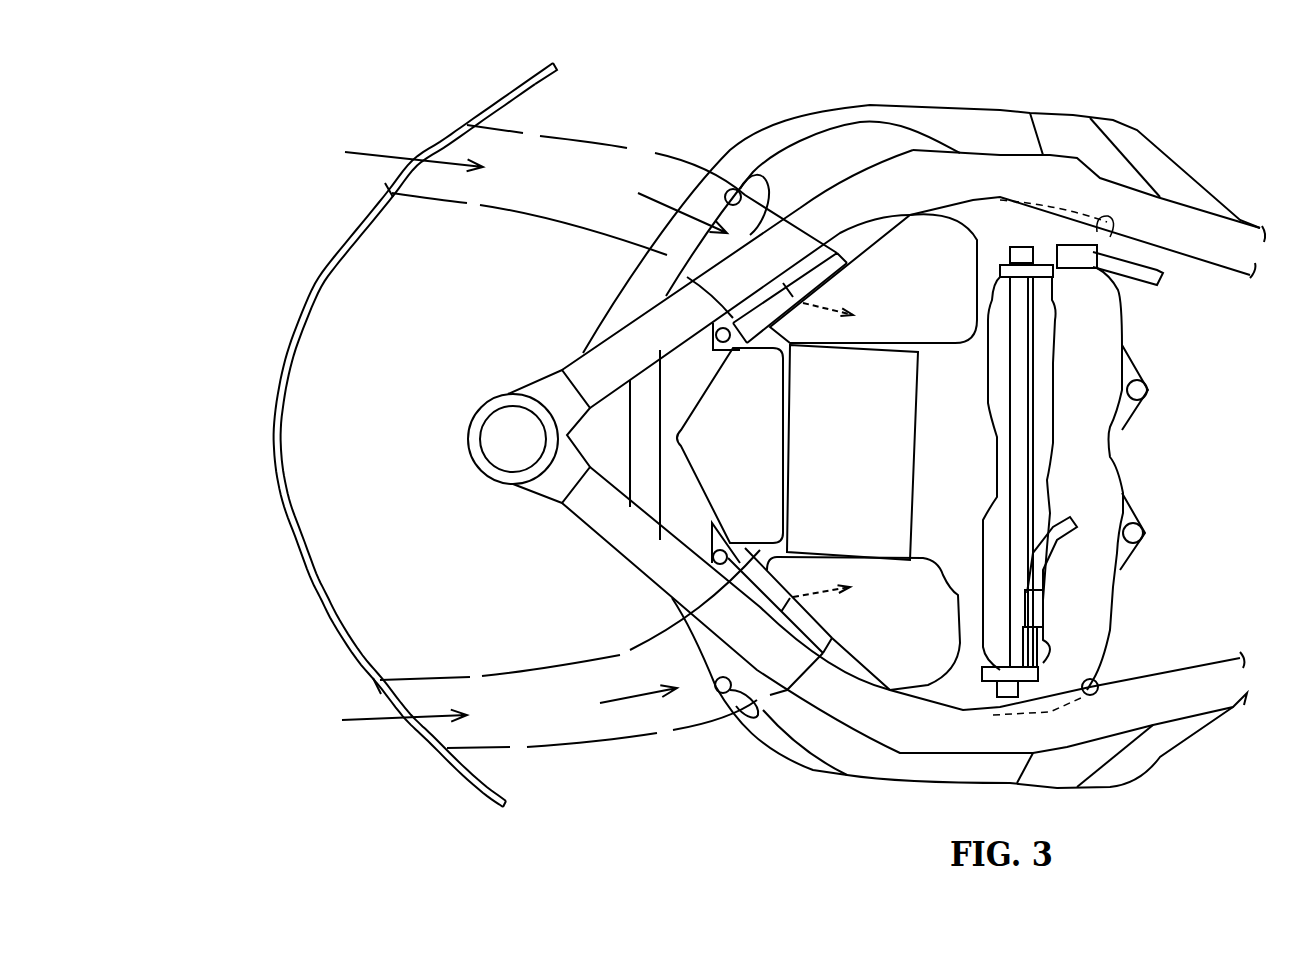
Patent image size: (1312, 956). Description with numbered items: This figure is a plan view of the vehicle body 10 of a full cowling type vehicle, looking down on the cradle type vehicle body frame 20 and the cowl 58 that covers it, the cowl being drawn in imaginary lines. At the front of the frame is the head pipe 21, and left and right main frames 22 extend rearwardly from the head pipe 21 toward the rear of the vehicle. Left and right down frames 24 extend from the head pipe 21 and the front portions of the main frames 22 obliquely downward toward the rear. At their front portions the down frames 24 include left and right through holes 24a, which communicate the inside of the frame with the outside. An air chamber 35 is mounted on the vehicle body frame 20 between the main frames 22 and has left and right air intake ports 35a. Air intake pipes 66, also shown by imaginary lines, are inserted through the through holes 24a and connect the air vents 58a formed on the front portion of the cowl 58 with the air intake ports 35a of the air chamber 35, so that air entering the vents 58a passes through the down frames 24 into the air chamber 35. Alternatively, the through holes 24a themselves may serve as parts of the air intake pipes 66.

The motorcycle 10 is at (222, 140).
The vehicle body frame 20 is at (479, 407).
The head pipe 21 is at (470, 436).
The main frames 22 is at (642, 342).
The down frames 24 is at (793, 127).
The through holes 24a is at (740, 177).
The air chamber 35 is at (1093, 440).
The air intake ports 35a is at (837, 253).
The cowl 58 is at (295, 538).
The air vents 58a is at (392, 190).
The air intake pipes 66 is at (627, 146).